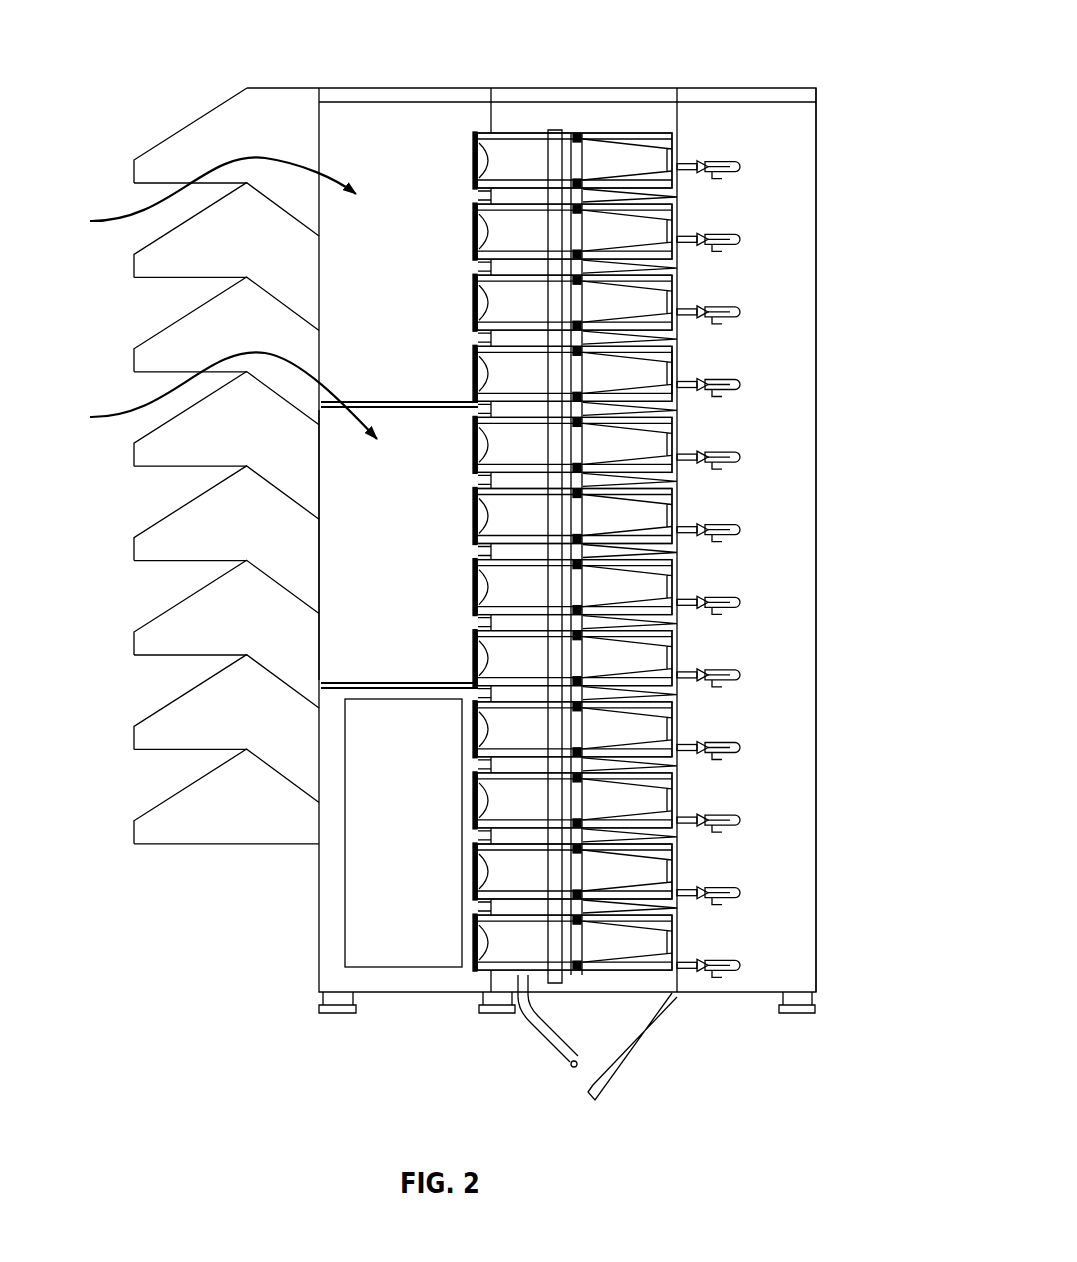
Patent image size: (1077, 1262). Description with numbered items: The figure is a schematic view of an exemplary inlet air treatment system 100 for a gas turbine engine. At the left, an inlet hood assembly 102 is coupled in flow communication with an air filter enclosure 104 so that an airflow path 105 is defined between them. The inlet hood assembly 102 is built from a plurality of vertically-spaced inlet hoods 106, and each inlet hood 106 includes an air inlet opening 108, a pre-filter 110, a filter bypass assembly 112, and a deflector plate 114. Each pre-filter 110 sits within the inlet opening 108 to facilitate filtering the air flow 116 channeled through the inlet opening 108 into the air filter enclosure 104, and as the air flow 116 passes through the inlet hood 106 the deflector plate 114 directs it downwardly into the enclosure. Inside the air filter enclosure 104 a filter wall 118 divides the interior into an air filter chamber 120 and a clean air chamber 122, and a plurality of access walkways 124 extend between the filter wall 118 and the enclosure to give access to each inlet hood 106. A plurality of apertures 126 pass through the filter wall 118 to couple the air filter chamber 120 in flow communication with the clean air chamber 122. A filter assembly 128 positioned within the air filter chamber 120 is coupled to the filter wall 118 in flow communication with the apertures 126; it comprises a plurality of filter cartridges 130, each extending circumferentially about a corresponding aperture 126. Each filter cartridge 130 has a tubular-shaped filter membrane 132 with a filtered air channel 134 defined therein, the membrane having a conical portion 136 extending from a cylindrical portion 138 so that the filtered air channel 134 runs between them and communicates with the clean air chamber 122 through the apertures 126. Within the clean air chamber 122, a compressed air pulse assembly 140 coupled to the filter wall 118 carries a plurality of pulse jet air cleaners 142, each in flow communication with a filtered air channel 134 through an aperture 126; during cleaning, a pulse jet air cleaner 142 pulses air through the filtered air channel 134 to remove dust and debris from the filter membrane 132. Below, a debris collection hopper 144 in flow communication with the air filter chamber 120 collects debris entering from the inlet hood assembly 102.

The inlet air treatment system 100 is at (803, 44).
The inlet hood assembly 102 is at (215, 80).
The air filter enclosure 104 is at (394, 78).
The airflow path 105 is at (331, 170).
The inlet hood 106 is at (133, 609).
The air inlet opening 108 is at (178, 657).
The pre-filter 110 is at (178, 563).
The filter bypass assembly 112 is at (178, 468).
The deflector plate 114 is at (288, 304).
The air flow 116 is at (322, 392).
The filter wall 118 is at (678, 116).
The air filter chamber 120 is at (374, 551).
The clean air chamber 122 is at (738, 576).
The access walkway 124 is at (397, 403).
The aperture 126 is at (678, 305).
The filter assembly 128 is at (576, 126).
The filter cartridge 130 is at (689, 365).
The filter membrane 132 is at (591, 127).
The filtered air channel 134 is at (607, 885).
The conical portion 136 is at (505, 851).
The cylindrical portion 138 is at (677, 848).
The compressed air pulse assembly 140 is at (734, 147).
The pulse jet air cleaner 142 is at (722, 240).
The debris collection hopper 144 is at (622, 1055).